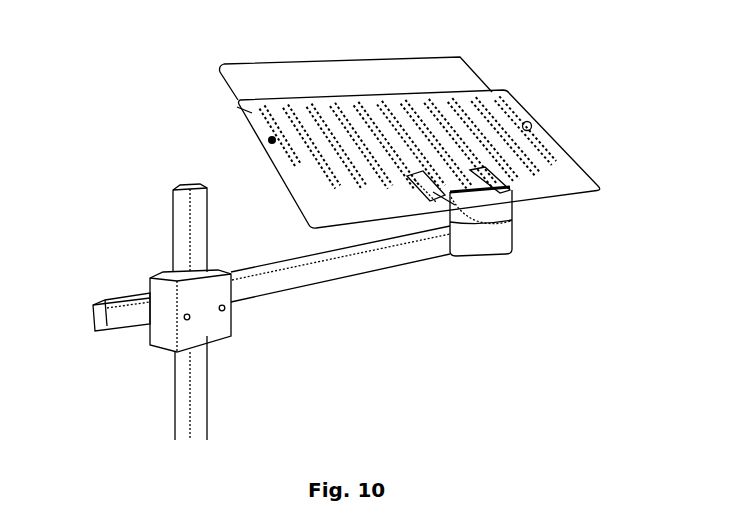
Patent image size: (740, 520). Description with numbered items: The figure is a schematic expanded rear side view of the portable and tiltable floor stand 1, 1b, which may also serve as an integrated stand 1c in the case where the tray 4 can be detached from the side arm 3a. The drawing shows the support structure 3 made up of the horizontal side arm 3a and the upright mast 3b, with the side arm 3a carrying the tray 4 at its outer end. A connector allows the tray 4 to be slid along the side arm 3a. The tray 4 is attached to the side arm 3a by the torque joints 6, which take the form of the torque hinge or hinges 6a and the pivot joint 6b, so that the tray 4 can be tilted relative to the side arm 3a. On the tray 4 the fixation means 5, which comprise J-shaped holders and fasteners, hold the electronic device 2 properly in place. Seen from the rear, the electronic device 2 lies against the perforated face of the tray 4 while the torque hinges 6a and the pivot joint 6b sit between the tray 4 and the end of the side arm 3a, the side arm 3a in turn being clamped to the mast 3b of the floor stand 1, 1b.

The floor stand 1 is at (346, 234).
The portable and tiltable floor stand 1b is at (354, 234).
The integrated stand 1c is at (354, 234).
The electronic device 2 is at (432, 65).
The side arm and mast 3 is at (271, 312).
The side arm 3a is at (367, 273).
The mast 3b is at (206, 415).
The tray 4 is at (419, 162).
The fixation means 5 is at (531, 123).
The torque joints 6 is at (511, 248).
The torque hinge 6a is at (445, 190).
The pivot joint 6b is at (497, 227).